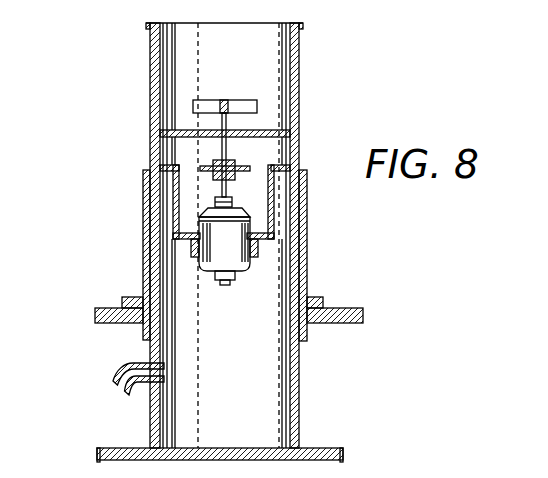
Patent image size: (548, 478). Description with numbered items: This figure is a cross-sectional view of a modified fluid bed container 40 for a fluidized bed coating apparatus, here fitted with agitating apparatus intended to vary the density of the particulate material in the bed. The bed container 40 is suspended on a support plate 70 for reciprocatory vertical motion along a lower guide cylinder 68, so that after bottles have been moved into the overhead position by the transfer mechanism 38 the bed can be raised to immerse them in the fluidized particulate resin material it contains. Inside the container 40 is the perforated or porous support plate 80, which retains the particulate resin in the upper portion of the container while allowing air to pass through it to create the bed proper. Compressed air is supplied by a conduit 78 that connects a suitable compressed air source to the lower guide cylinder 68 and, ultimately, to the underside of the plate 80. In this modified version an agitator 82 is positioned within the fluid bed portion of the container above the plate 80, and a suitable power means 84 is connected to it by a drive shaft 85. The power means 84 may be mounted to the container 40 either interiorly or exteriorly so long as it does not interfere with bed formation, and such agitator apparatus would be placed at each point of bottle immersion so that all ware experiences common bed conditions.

The fluid bed container 40 is at (300, 65).
The perforated or porous support plate 80 is at (266, 130).
The agitator 82 is at (238, 104).
The drive shaft 85 is at (231, 154).
The power means 84 is at (235, 272).
The support plate 70 is at (350, 323).
The lower guide cylinder 68 is at (298, 394).
The conduit 78 is at (113, 375).
The transfer mechanism 38 is at (112, 447).